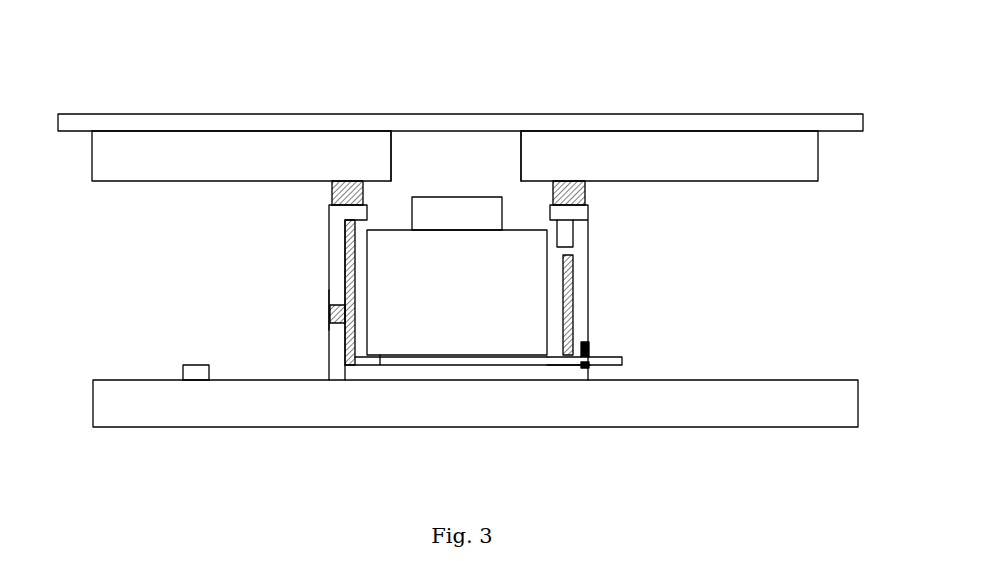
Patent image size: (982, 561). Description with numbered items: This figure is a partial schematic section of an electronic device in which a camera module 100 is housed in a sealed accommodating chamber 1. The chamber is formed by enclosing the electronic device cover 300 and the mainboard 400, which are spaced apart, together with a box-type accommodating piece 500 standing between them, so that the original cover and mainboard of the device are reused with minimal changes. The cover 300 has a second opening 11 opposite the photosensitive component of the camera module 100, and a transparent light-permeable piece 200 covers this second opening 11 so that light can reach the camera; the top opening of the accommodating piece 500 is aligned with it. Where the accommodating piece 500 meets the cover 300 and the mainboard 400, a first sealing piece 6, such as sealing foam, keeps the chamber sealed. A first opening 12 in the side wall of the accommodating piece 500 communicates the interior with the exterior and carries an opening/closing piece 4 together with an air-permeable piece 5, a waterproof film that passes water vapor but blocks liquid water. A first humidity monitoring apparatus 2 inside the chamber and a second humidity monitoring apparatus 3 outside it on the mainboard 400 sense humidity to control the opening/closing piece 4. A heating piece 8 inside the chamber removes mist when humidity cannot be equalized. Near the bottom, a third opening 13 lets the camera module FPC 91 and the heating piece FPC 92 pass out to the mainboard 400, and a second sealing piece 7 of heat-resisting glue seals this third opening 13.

The light-permeable piece 200 is at (485, 121).
The electronic device cover 300 is at (246, 147).
The second opening 11 is at (443, 155).
The first sealing piece 6 is at (332, 195).
The accommodating piece 500 is at (585, 272).
The first opening 12 is at (325, 310).
The accommodating chamber 1 is at (355, 250).
The heating piece 8 is at (573, 307).
The first humidity monitoring apparatus 2 is at (565, 233).
The opening/closing piece 4 is at (330, 314).
The camera module 100 is at (487, 325).
The air-permeable piece 5 is at (357, 365).
The camera module FPC 91 is at (560, 365).
The second sealing piece 7 is at (590, 345).
The heating piece FPC 92 is at (590, 360).
The third opening 13 is at (610, 368).
The second humidity monitoring apparatus 3 is at (197, 365).
The mainboard 400 is at (280, 392).